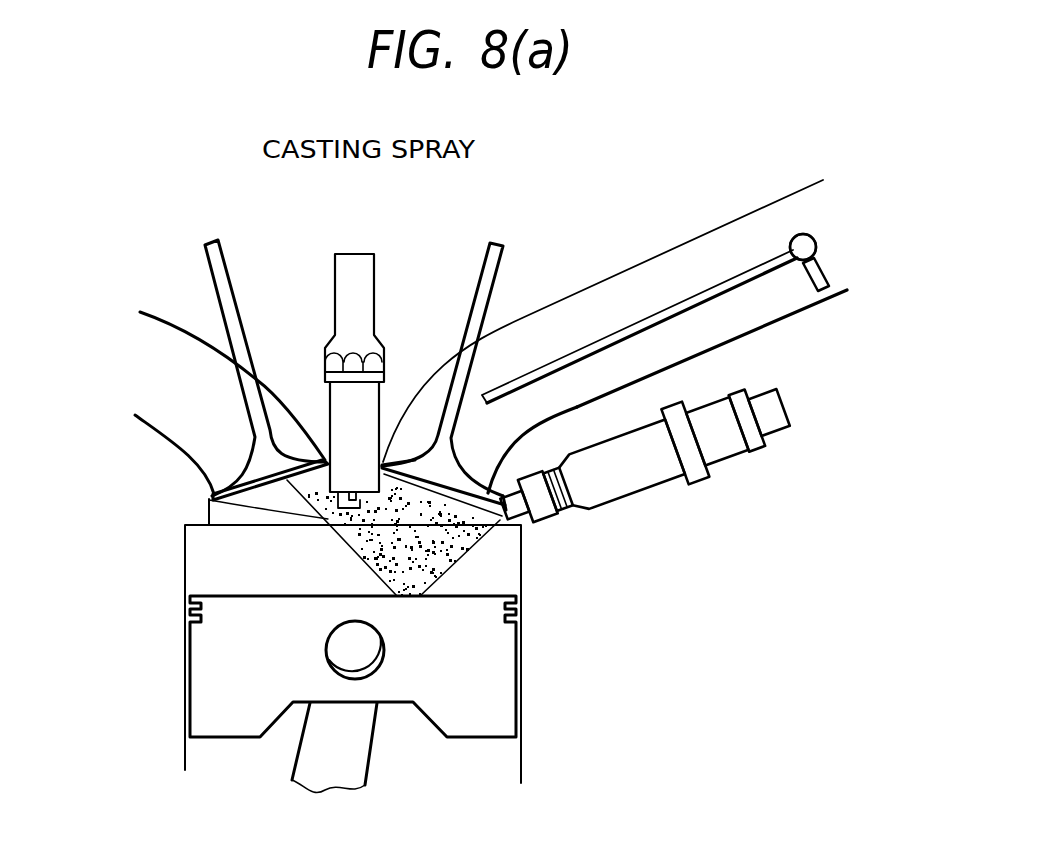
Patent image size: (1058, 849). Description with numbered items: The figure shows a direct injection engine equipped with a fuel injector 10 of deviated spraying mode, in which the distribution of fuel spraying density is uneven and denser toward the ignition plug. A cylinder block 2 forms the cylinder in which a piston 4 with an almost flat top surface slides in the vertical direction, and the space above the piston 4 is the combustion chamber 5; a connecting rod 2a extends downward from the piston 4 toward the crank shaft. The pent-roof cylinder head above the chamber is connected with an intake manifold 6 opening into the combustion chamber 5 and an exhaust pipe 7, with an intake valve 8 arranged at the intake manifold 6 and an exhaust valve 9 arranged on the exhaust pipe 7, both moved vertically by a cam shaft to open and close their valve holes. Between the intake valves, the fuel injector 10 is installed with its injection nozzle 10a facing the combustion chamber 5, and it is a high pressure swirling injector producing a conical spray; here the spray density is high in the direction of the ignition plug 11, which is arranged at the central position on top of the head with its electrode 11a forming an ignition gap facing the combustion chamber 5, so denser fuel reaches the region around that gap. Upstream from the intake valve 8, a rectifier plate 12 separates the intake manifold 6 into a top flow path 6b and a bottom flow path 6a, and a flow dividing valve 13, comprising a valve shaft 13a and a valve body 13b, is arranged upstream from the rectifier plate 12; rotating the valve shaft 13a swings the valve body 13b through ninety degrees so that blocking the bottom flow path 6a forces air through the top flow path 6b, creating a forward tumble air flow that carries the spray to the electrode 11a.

The cylinder block 2 is at (521, 757).
The connecting rod 2a is at (355, 753).
The piston 4 is at (205, 668).
The combustion chamber 5 is at (198, 576).
The intake manifold 6 is at (820, 307).
The bottom flow path 6a is at (667, 343).
The top flow path 6b is at (562, 327).
The exhaust pipe 7 is at (140, 372).
The intake valve 8 is at (500, 248).
The exhaust valve 9 is at (228, 258).
The fuel injector 10 is at (660, 477).
The injection nozzle 10a is at (527, 532).
The ignition plug 11 is at (360, 264).
The electrode 11a is at (209, 500).
The rectifier plate 12 is at (677, 297).
The flow dividing valve 13 is at (800, 240).
The valve shaft 13a is at (817, 240).
The valve body 13b is at (820, 273).